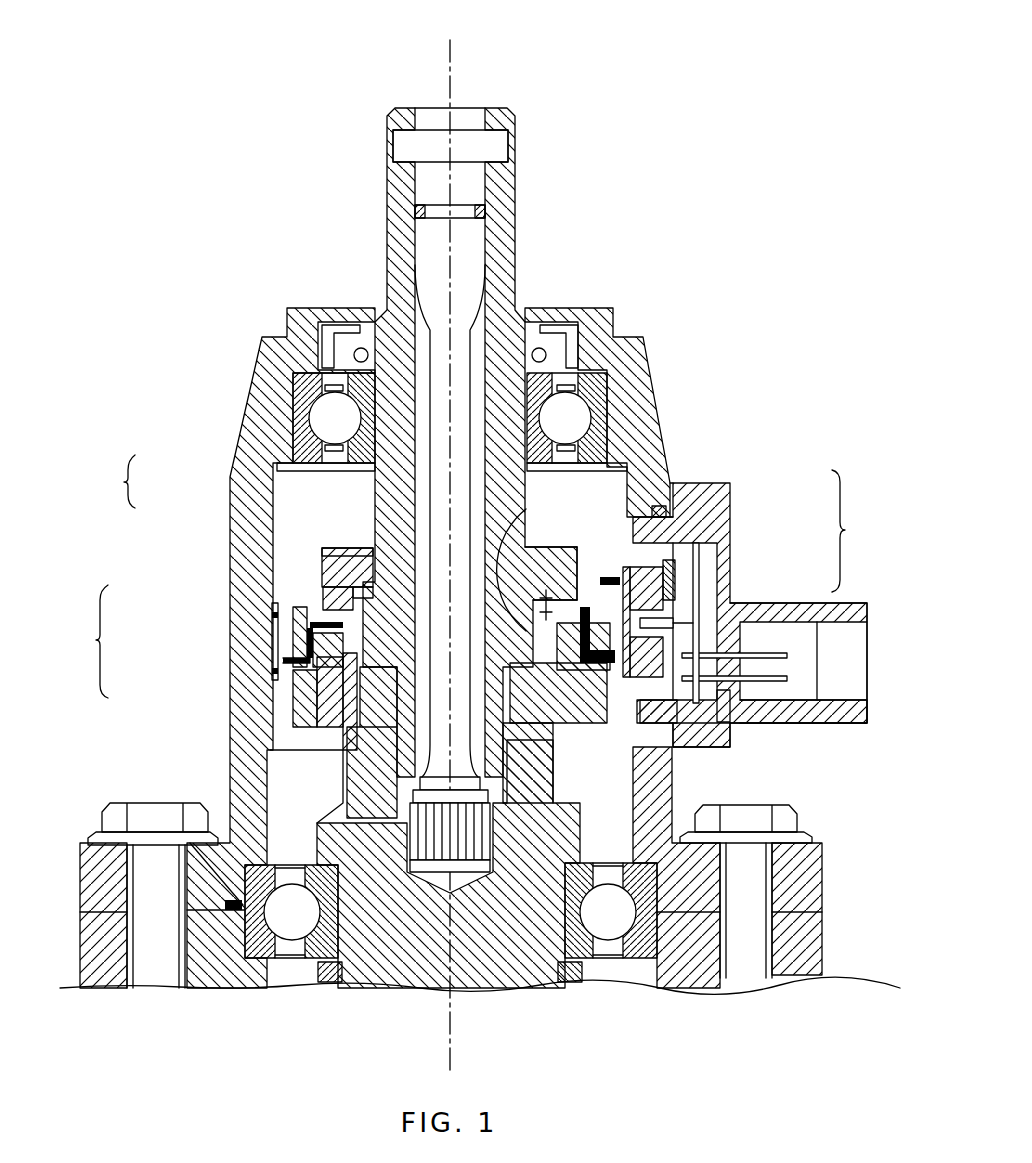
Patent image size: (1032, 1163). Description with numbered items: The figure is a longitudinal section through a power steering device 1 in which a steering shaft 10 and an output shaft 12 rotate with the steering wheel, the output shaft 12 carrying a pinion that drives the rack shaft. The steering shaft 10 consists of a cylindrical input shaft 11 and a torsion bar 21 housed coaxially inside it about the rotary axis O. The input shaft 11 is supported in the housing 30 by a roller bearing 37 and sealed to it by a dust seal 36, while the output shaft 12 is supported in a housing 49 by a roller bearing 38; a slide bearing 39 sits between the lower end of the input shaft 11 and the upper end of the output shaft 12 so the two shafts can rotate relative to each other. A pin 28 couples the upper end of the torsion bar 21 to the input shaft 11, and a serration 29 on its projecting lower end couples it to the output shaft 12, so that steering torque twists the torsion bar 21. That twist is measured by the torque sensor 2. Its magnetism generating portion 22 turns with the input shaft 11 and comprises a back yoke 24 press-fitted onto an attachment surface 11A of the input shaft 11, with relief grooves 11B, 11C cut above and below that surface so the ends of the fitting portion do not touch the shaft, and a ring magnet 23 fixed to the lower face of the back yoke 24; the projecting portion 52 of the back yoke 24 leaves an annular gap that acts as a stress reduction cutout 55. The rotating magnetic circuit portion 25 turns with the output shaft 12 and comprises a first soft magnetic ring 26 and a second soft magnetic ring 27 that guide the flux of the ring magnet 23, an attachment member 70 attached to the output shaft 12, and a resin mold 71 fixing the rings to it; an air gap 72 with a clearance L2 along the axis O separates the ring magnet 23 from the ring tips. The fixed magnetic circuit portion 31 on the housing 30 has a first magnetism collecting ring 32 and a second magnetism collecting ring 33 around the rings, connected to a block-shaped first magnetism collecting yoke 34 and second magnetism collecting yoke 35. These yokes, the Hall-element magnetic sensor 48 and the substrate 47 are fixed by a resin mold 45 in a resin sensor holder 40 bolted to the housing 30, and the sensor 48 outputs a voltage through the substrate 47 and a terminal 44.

The rotary axis O is at (446, 94).
The power steering device 1 is at (742, 168).
The torque sensor 2 is at (744, 486).
The steering shaft 10 is at (522, 188).
The input shaft 11 is at (386, 190).
The attachment surface 11A is at (612, 562).
The relief groove 11B is at (541, 523).
The relief groove 11C is at (625, 575).
The output shaft 12 is at (337, 830).
The torsion bar 21 is at (438, 246).
The magnetism generating portion 22 is at (115, 481).
The ring magnet 23 is at (325, 588).
The back yoke 24 is at (330, 572).
The rotating magnetic circuit portion 25 is at (85, 641).
The first soft magnetic ring 26 is at (272, 606).
The second soft magnetic ring 27 is at (280, 635).
The pin 28 is at (398, 146).
The serration 29 is at (408, 812).
The housing 30 is at (258, 342).
The fixed magnetic circuit portion 31 is at (726, 596).
The first magnetism collecting ring 32 is at (670, 578).
The second magnetism collecting ring 33 is at (697, 622).
The first magnetism collecting yoke 34 is at (668, 600).
The second magnetism collecting yoke 35 is at (676, 624).
The dust seal 36 is at (352, 320).
The roller bearing 37 is at (298, 405).
The roller bearing 38 is at (236, 910).
The slide bearing 39 is at (292, 748).
The sensor holder 40 is at (836, 722).
The terminal 44 is at (790, 682).
The resin mold 45 is at (696, 726).
The substrate 47 is at (760, 706).
The magnetic sensor 48 is at (726, 706).
The housing 49 is at (822, 946).
The projecting portion 52 is at (347, 575).
The stress reduction cutout 55 is at (338, 548).
The attachment member 70 is at (312, 675).
The resin mold 71 is at (280, 665).
The air gap 72 is at (294, 575).
The clearance L2 is at (541, 497).